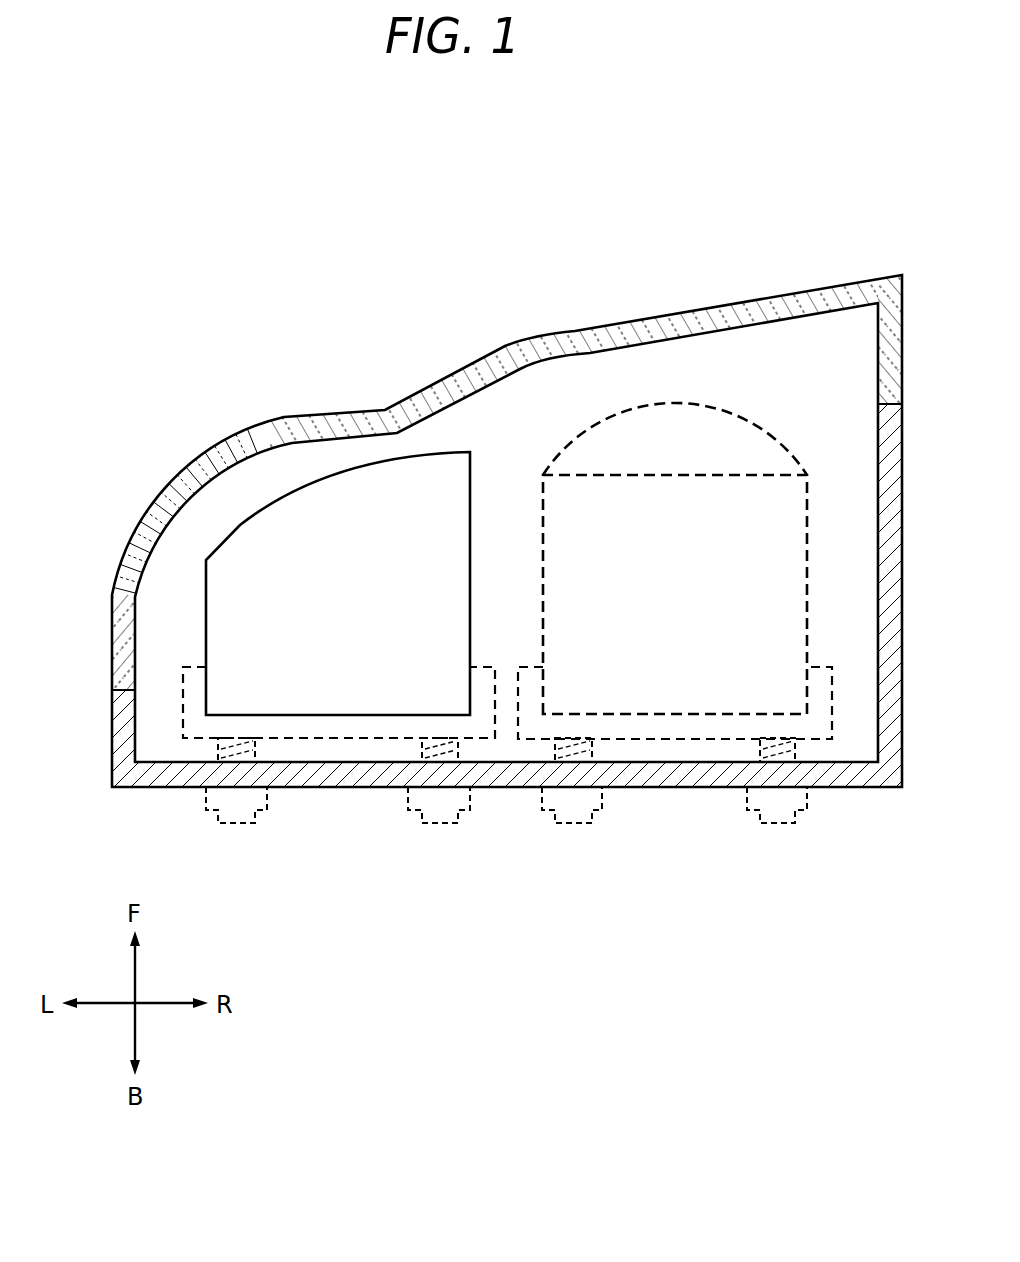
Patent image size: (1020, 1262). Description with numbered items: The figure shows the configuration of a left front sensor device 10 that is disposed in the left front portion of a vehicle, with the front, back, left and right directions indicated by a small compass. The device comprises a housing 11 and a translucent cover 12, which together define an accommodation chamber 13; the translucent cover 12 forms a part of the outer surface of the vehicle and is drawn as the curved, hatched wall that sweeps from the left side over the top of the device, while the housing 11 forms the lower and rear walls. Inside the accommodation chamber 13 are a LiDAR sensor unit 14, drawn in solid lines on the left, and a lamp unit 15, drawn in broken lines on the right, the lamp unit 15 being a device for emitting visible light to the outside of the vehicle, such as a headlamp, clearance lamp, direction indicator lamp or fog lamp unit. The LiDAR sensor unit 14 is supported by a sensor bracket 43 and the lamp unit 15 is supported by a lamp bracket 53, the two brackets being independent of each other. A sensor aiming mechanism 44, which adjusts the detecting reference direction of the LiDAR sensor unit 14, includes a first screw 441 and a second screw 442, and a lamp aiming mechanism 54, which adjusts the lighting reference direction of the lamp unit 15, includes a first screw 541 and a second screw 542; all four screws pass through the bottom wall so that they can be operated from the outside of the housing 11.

The left front sensor device 10 is at (472, 523).
The housing 11 is at (120, 732).
The translucent cover 12 is at (127, 553).
The accommodation chamber 13 is at (160, 635).
The LiDAR sensor unit 14 is at (265, 545).
The lamp unit 15 is at (610, 447).
The sensor bracket 43 is at (188, 725).
The sensor aiming mechanism 44 is at (306, 809).
The first screw 441 is at (237, 803).
The second screw 442 is at (440, 803).
The lamp bracket 53 is at (820, 722).
The lamp aiming mechanism 54 is at (709, 808).
The first screw 541 is at (572, 803).
The second screw 542 is at (777, 803).